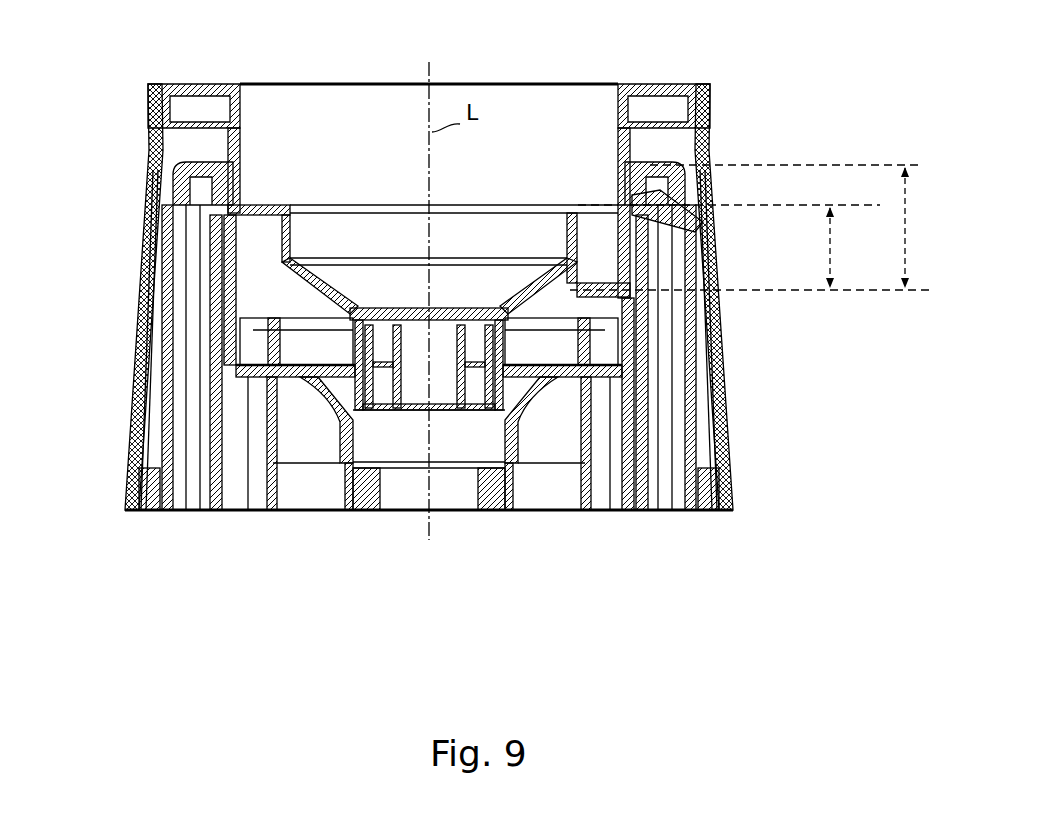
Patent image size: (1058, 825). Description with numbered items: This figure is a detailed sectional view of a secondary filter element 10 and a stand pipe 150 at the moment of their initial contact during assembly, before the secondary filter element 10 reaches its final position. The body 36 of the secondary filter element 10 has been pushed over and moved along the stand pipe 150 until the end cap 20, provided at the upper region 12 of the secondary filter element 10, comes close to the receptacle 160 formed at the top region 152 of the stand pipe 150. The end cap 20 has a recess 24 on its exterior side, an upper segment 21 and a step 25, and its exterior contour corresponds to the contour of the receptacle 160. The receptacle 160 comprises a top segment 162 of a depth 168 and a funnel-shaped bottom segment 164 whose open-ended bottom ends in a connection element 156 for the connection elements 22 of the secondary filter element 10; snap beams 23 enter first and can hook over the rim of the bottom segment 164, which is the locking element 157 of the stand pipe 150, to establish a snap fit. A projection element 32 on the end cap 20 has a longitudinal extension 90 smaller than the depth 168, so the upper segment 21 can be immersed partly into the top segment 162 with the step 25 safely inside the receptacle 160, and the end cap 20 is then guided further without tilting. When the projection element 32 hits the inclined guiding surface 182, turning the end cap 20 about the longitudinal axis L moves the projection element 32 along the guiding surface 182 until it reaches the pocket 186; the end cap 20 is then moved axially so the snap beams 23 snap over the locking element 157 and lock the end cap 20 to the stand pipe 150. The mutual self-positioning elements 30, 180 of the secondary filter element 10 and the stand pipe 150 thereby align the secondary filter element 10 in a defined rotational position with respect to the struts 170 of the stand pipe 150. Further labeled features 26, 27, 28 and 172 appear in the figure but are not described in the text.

The secondary filter element 10 is at (724, 220).
The upper region 12 is at (480, 297).
The end cap 20 is at (475, 166).
The upper segment 21 is at (250, 140).
The connection elements 22 is at (595, 365).
The snap beams 23 is at (508, 359).
The recess 24 is at (475, 166).
The step 25 is at (290, 205).
The funnel wall 26 is at (298, 253).
The funnel bottom 27 is at (445, 308).
The cap outer wall 28 is at (475, 187).
The self-positioning element 30 is at (546, 263).
The projection element 32 is at (590, 248).
The body 36 is at (738, 430).
The longitudinal extension 90 is at (853, 240).
The stand pipe 150 is at (421, 329).
The top region 152 is at (152, 363).
The connection element 156 is at (429, 467).
The locking element 157 is at (350, 462).
The receptacle 160 is at (298, 298).
The top segment 162 is at (250, 247).
The bottom segment 164 is at (243, 318).
The depth 168 is at (893, 270).
The struts 170 is at (253, 495).
The foot 172 is at (157, 475).
The self-positioning element 180 is at (329, 283).
The guiding surface 182 is at (250, 321).
The pocket 186 is at (261, 359).